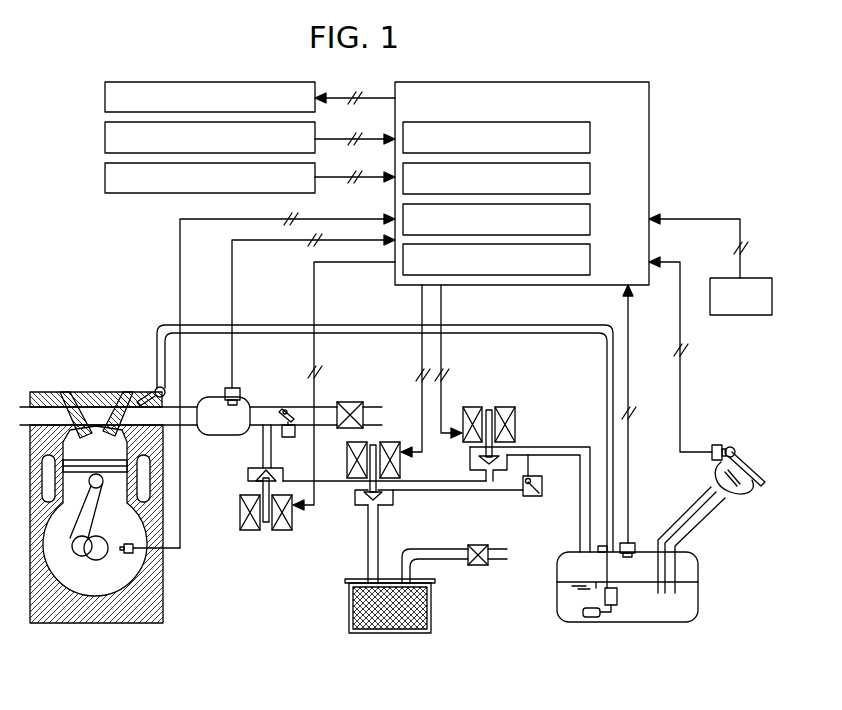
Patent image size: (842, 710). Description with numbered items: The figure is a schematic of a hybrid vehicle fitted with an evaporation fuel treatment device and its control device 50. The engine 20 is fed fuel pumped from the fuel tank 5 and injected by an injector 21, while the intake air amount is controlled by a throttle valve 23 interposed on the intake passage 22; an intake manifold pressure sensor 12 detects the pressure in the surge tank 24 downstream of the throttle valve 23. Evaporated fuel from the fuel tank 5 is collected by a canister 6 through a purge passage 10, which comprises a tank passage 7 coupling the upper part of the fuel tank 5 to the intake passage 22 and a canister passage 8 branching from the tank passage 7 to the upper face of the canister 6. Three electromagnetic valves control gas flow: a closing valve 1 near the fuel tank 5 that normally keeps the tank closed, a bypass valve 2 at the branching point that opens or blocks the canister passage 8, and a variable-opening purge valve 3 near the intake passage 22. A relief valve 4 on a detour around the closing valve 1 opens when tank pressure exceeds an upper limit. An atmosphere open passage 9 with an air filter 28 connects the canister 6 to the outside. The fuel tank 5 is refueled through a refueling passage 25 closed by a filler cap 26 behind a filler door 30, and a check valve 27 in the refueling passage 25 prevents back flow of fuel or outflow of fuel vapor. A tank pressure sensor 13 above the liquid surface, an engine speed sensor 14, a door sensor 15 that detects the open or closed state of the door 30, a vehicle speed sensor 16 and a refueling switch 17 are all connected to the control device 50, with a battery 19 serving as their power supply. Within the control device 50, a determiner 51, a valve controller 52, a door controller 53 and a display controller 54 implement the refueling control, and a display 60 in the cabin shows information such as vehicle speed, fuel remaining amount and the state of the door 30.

The closing valve 1 is at (502, 405).
The bypass valve 2 is at (394, 441).
The purge valve 3 is at (250, 532).
The relief valve 4 is at (535, 497).
The fuel tank 5 is at (556, 600).
The canister 6 is at (348, 607).
The tank passage 7 is at (575, 446).
The canister passage 8 is at (367, 545).
The atmosphere open passage 9 is at (437, 548).
The purge passage 10 is at (538, 395).
The intake manifold pressure sensor 12 is at (228, 387).
The tank pressure sensor 13 is at (630, 542).
The engine speed sensor 14 is at (130, 554).
The door sensor 15 is at (717, 444).
The vehicle speed sensor 16 is at (104, 139).
The refueling switch 17 is at (104, 177).
The battery 19 is at (740, 315).
The engine 20 is at (82, 384).
The injector 21 is at (143, 388).
The intake passage 22 is at (265, 404).
The throttle valve 23 is at (287, 406).
The surge tank 24 is at (222, 437).
The refueling passage 25 is at (705, 524).
The filler cap 26 is at (752, 489).
The check valve 27 is at (722, 501).
The air filter 28 is at (483, 544).
The filler door 30 is at (757, 466).
The control device 50 is at (652, 137).
The determiner 51 is at (592, 137).
The valve controller 52 is at (592, 177).
The door controller 53 is at (592, 218).
The display controller 54 is at (592, 258).
The display 60 is at (104, 97).